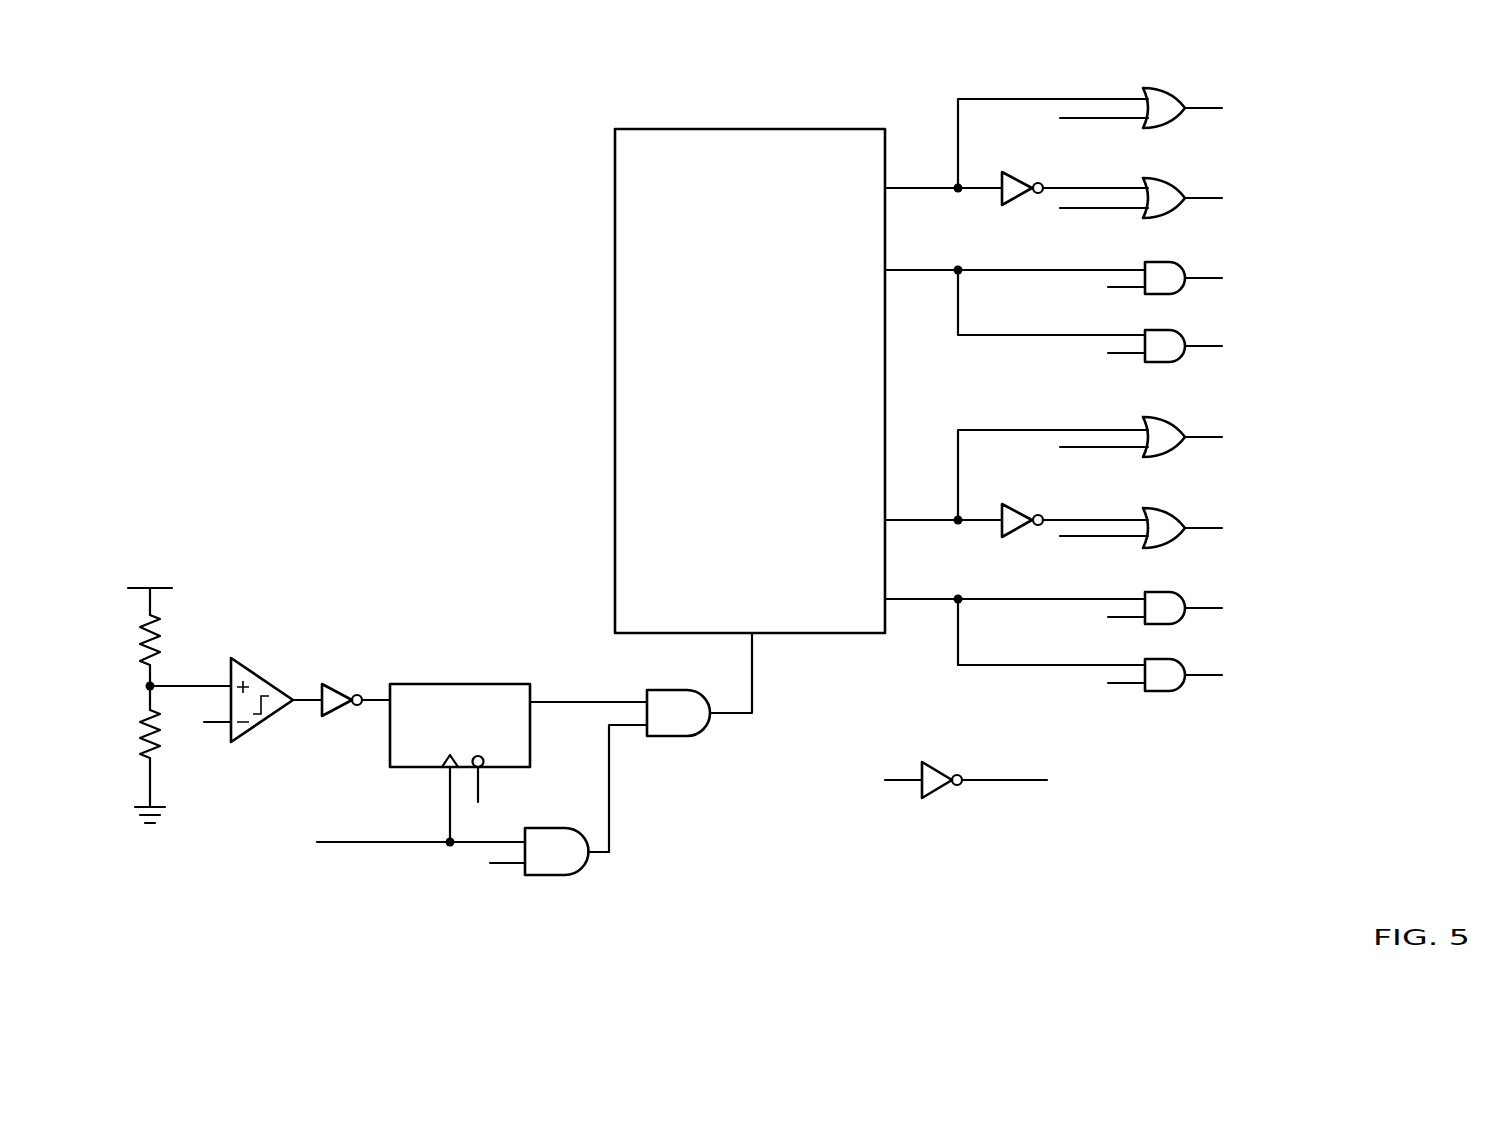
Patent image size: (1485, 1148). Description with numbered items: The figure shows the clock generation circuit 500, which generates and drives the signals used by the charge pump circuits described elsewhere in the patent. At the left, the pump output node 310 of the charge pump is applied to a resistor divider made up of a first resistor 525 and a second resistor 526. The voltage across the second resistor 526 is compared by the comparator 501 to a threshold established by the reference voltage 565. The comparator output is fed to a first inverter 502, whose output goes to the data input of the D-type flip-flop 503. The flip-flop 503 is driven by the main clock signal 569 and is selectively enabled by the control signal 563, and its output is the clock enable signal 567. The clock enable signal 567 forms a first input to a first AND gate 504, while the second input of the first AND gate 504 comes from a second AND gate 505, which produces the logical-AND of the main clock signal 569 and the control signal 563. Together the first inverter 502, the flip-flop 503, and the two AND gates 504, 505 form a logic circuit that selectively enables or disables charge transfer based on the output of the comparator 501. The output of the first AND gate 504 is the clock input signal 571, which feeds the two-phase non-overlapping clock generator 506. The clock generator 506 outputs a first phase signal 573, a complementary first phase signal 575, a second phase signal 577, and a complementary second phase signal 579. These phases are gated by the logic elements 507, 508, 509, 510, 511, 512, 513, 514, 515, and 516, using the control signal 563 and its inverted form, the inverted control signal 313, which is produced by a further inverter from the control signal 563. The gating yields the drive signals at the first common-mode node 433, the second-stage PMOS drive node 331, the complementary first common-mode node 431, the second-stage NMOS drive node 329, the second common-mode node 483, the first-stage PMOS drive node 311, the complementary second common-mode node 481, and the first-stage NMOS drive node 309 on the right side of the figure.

The clock generation circuit 500 is at (298, 194).
The output node Pump_out 310 is at (188, 548).
The resistor R25 525 is at (158, 637).
The resistor R26 526 is at (158, 730).
The comparator U1 501 is at (253, 667).
The reference voltage vref 565 is at (210, 757).
The inverter U2 502 is at (338, 685).
The flip-flop U3 503 is at (430, 683).
The Clock Enable 567 is at (563, 643).
The main clock signal 569 is at (333, 880).
The control signal en_cp 563 is at (493, 897).
The AND gate U4 504 is at (672, 740).
The AND gate U5 505 is at (573, 877).
The Clock Input 571 is at (753, 668).
The two-phase non-overlapping clock generator U6 506 is at (764, 466).
The signal p1 573 is at (917, 157).
The signal p1b 575 is at (935, 250).
The signal p2 577 is at (917, 488).
The signal p2b 579 is at (910, 635).
The signal en_cp_b 313 is at (1140, 137).
The logic element U7 507 is at (1164, 88).
The logic element U8 508 is at (1002, 183).
The logic element U9 509 is at (1180, 215).
The logic element U10 510 is at (1185, 292).
The logic element U11 511 is at (1180, 357).
The logic element U12 512 is at (1185, 450).
The logic element U13 513 is at (1007, 535).
The logic element U14 514 is at (1185, 540).
The logic element U15 515 is at (1185, 620).
The logic element U16 516 is at (1170, 692).
The node p1_cm1 433 is at (1270, 92).
The node pmos_dr_stg2 331 is at (1342, 175).
The node p1b_cm1 431 is at (1280, 260).
The node nmos_dr_stg2 329 is at (1338, 328).
The node p2_cm1 483 is at (1270, 422).
The node pmos_dr_stg1 311 is at (1338, 512).
The node p2b_cm1 481 is at (1280, 592).
The node nmos_dr_stg1 309 is at (1338, 660).